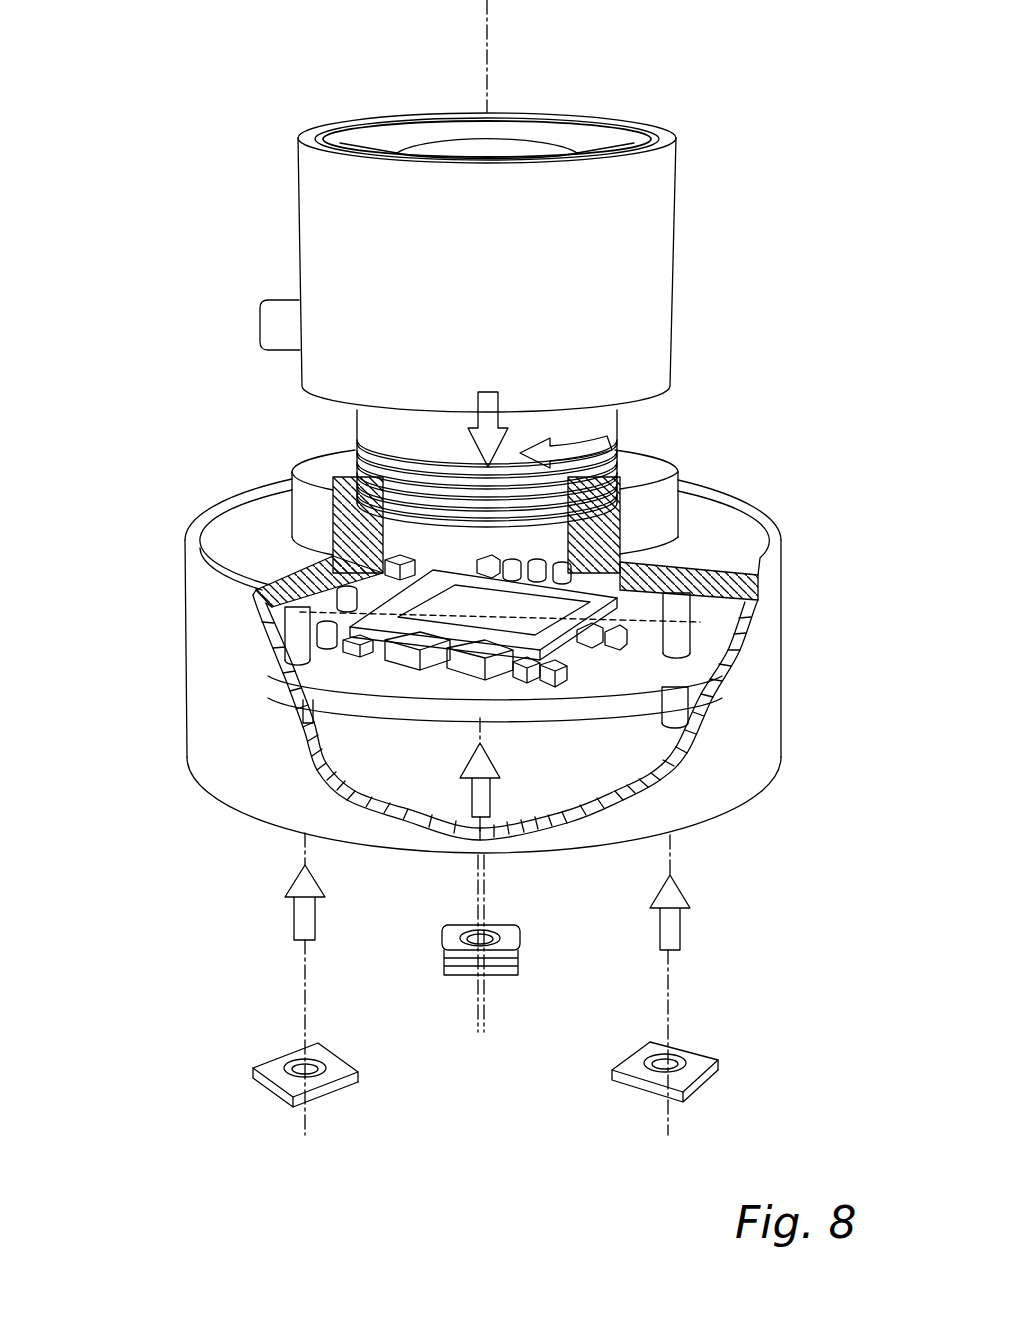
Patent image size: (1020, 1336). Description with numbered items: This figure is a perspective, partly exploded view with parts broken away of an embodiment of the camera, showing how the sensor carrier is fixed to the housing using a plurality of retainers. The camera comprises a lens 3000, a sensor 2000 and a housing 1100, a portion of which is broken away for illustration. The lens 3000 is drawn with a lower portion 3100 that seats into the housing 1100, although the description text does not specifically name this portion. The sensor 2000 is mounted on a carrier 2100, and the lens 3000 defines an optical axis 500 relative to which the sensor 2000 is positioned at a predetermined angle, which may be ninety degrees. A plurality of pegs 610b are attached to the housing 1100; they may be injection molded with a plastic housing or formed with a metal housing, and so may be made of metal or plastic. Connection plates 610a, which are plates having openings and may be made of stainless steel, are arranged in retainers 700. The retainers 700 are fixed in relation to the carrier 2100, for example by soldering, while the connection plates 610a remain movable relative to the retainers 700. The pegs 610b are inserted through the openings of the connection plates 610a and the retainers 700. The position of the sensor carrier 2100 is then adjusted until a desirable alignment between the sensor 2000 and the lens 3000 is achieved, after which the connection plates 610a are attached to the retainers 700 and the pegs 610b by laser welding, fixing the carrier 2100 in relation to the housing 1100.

The optical axis 500 is at (487, 40).
The lens 3000 is at (637, 283).
The threaded portion of lens 3100 is at (598, 410).
The pegs 610b is at (365, 470).
The sensor 2000 is at (590, 585).
The housing 1100 is at (760, 714).
The carrier 2100 is at (548, 712).
The connection plates 610a is at (292, 1060).
The retainers 700 is at (707, 1082).